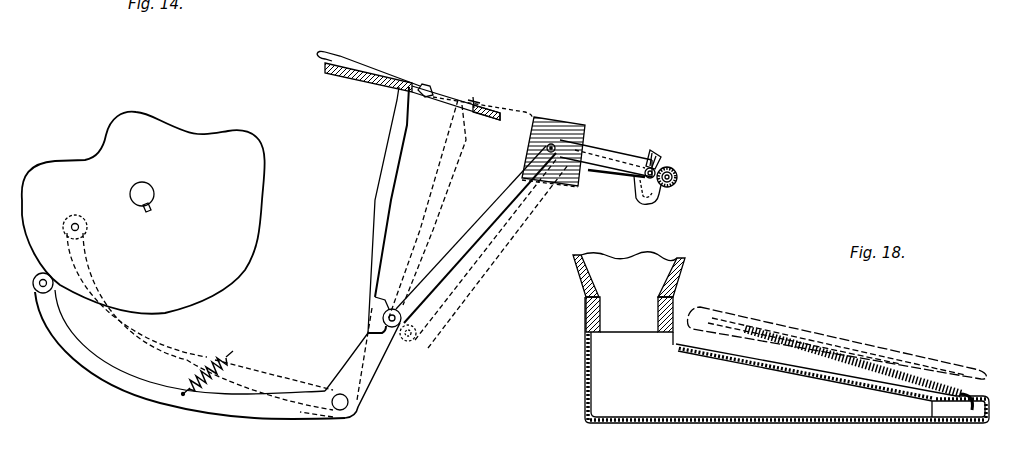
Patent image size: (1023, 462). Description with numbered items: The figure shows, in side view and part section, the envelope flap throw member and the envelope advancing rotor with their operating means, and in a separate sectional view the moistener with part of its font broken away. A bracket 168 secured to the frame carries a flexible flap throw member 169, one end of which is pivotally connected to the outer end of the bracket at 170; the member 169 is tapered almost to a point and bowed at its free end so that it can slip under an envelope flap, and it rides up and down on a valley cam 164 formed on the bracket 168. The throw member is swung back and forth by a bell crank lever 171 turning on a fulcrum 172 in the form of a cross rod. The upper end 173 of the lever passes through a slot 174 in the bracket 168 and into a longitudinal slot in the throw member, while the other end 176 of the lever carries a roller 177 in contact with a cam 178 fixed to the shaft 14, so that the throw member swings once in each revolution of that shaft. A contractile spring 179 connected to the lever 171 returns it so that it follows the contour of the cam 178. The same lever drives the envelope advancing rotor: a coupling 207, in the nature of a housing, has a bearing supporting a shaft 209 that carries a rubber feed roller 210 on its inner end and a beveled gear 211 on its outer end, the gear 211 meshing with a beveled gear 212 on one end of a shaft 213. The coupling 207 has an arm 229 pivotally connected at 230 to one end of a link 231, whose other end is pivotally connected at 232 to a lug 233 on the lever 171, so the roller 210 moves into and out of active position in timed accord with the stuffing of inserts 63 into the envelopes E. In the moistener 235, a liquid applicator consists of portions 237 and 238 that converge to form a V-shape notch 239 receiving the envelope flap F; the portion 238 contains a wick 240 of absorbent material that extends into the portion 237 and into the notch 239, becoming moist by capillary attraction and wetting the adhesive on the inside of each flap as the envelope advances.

In FIG. 14, the shaft 14 is at (147, 188).
In FIG. 14, the cam 178 is at (70, 162).
In FIG. 14, the roller 177 is at (33, 282).
In FIG. 14, the other end of the lever 176 is at (68, 343).
In FIG. 14, the contractile spring 179 is at (226, 364).
In FIG. 14, the bell crank lever 171 is at (373, 228).
In FIG. 14, the fulcrum 172 is at (349, 403).
In FIG. 14, the lug 233 is at (378, 327).
In FIG. 14, the pivotal connection 232 is at (415, 330).
In FIG. 14, the link 231 is at (482, 247).
In FIG. 14, the rubber feed roller 210 is at (556, 127).
In FIG. 14, the pivotal connection 230 is at (551, 144).
In FIG. 14, the arm 229 is at (599, 150).
In FIG. 14, the shaft 209 is at (600, 173).
In FIG. 14, the beveled gear 211 is at (648, 158).
In FIG. 14, the beveled gear 212 is at (673, 168).
In FIG. 14, the shaft 213 is at (678, 178).
In FIG. 14, the coupling 207 is at (641, 202).
In FIG. 14, the flexible flap throw member 169 is at (368, 67).
In FIG. 14, the bracket 168 is at (349, 79).
In FIG. 14, the valley cam 164 is at (390, 91).
In FIG. 14, the upper end of the lever 173 is at (405, 83).
In FIG. 14, the pivotal connection 170 is at (428, 85).
In FIG. 14, the slot 174 is at (443, 102).
In FIG. 18, the V-shape notch 239 is at (684, 264).
In FIG. 18, the moistener 235 is at (578, 314).
In FIG. 18, the applicator portion 237 is at (805, 408).
In FIG. 18, the envelopes E is at (815, 333).
In FIG. 18, the inserts 63 is at (723, 320).
In FIG. 18, the applicator portion 238 is at (900, 372).
In FIG. 18, the flap F is at (732, 342).
In FIG. 18, the wick 240 is at (792, 357).